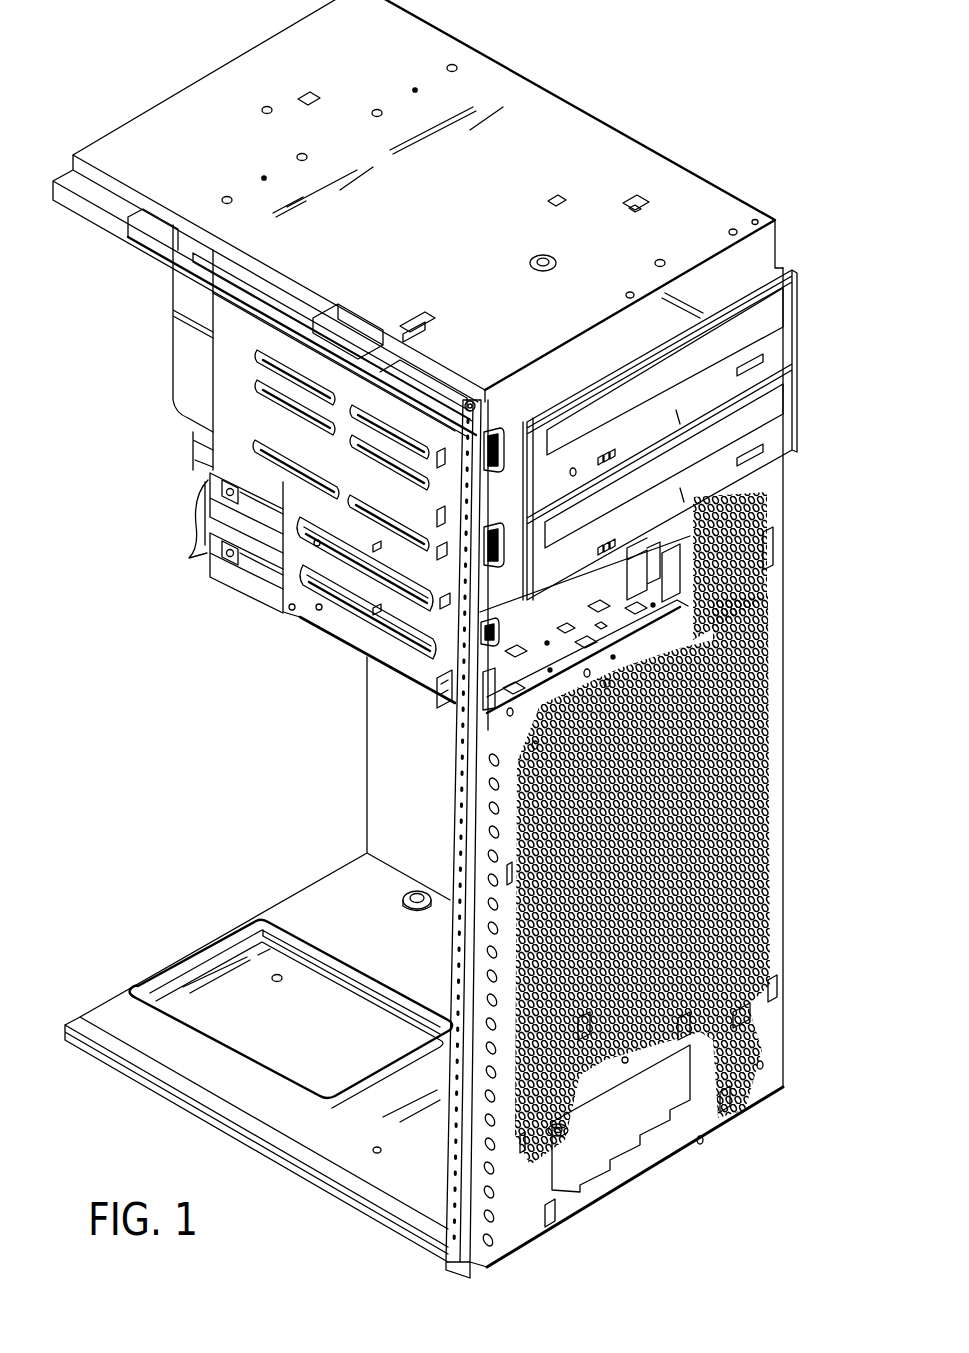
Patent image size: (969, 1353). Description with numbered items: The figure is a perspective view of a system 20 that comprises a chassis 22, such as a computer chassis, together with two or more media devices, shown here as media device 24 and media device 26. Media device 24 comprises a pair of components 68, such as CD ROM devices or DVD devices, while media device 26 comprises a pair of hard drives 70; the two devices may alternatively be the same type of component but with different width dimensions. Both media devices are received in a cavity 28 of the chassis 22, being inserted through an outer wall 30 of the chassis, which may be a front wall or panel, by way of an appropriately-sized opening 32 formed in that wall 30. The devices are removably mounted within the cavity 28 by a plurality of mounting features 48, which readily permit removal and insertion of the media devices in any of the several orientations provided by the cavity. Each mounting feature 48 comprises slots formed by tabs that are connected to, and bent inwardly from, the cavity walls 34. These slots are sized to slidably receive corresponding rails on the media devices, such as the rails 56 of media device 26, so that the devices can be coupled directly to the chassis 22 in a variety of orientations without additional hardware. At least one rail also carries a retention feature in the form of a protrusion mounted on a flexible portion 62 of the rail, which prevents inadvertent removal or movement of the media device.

The system 20 is at (603, 63).
The chassis 22 is at (228, 52).
The media device 24 is at (167, 270).
The media device 26 is at (190, 420).
The cavity 28 is at (522, 700).
The outer wall 30 is at (490, 830).
The opening 32 is at (563, 710).
The cavity walls 34 is at (300, 588).
The mounting features 48 is at (292, 518).
The rails 56 is at (208, 545).
The flexible portion 62 is at (497, 527).
The components 68 is at (777, 340).
The hard drives 70 is at (432, 681).